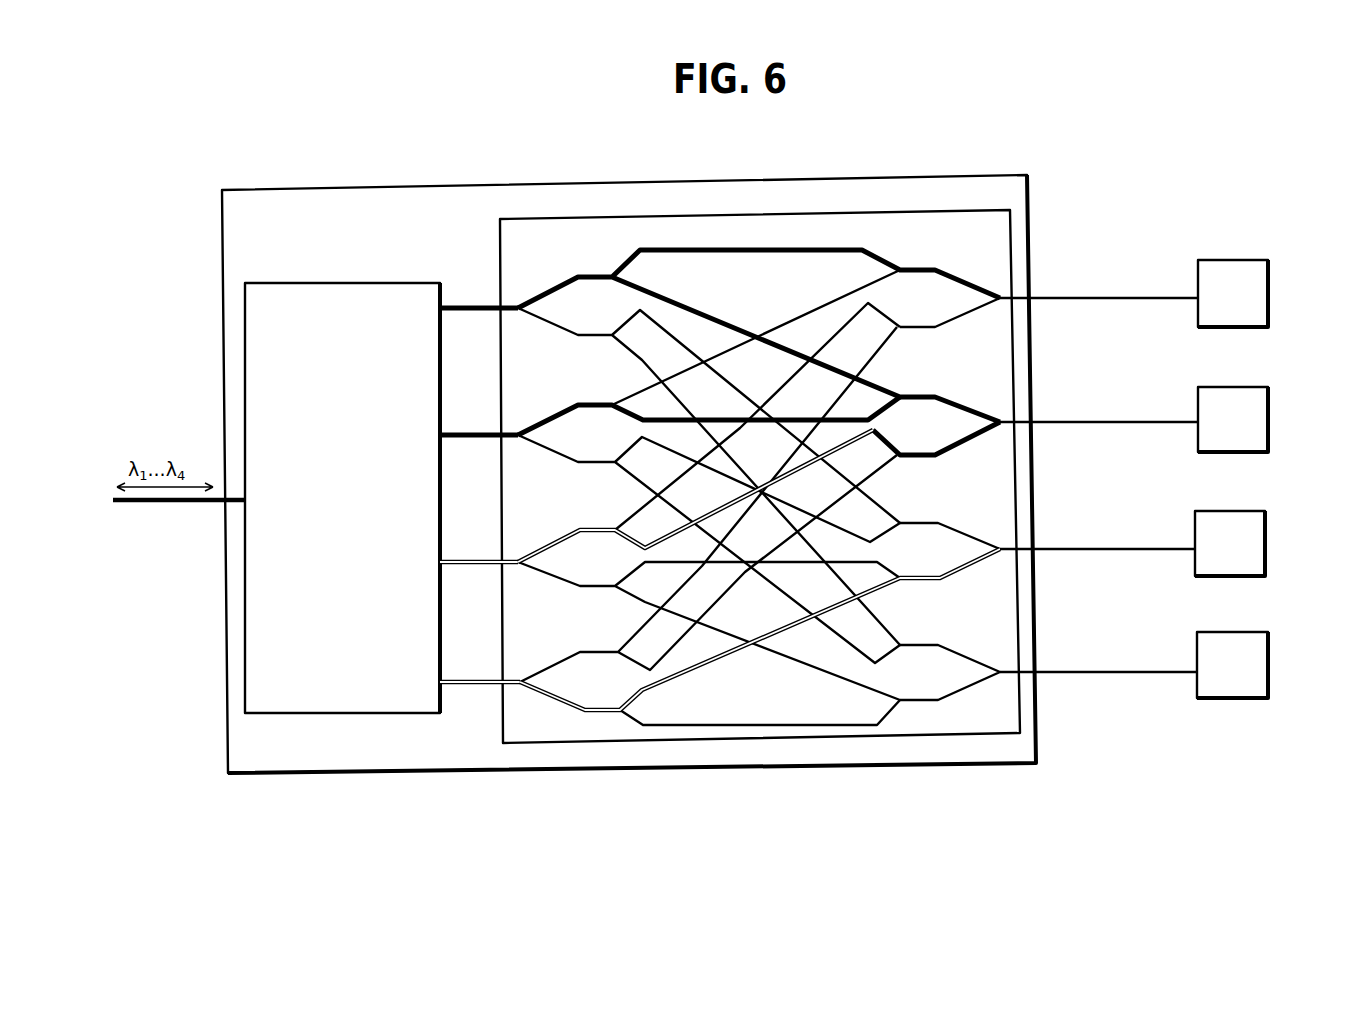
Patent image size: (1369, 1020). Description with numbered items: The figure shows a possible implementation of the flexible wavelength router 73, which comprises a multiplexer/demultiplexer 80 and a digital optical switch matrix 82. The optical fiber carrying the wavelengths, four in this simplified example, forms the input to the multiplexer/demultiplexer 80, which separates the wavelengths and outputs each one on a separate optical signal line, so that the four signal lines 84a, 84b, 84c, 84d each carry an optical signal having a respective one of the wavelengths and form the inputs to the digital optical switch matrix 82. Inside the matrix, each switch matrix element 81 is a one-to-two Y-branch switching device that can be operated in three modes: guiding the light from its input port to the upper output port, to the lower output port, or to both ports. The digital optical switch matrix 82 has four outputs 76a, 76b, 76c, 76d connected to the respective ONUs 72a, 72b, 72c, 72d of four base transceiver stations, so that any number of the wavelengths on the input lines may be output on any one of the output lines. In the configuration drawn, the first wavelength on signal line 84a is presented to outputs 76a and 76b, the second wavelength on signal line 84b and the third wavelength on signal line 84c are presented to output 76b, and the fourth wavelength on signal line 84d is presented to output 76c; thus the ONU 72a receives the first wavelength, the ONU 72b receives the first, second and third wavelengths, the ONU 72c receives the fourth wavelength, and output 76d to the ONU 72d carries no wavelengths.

The flexible wavelength router 73 is at (826, 179).
The multiplexer/demultiplexer 80 is at (336, 283).
The digital optical switch matrix 82 is at (499, 224).
The switch matrix element 81 is at (611, 470).
The signal line 84a is at (467, 314).
The signal line 84b is at (467, 440).
The signal line 84c is at (467, 567).
The signal line 84d is at (467, 688).
The output 76a is at (1110, 297).
The output 76b is at (1118, 421).
The output 76c is at (1121, 548).
The output 76d is at (1124, 671).
The ONU 72a is at (1268, 293).
The ONU 72b is at (1268, 419).
The ONU 72c is at (1265, 545).
The ONU 72d is at (1268, 668).